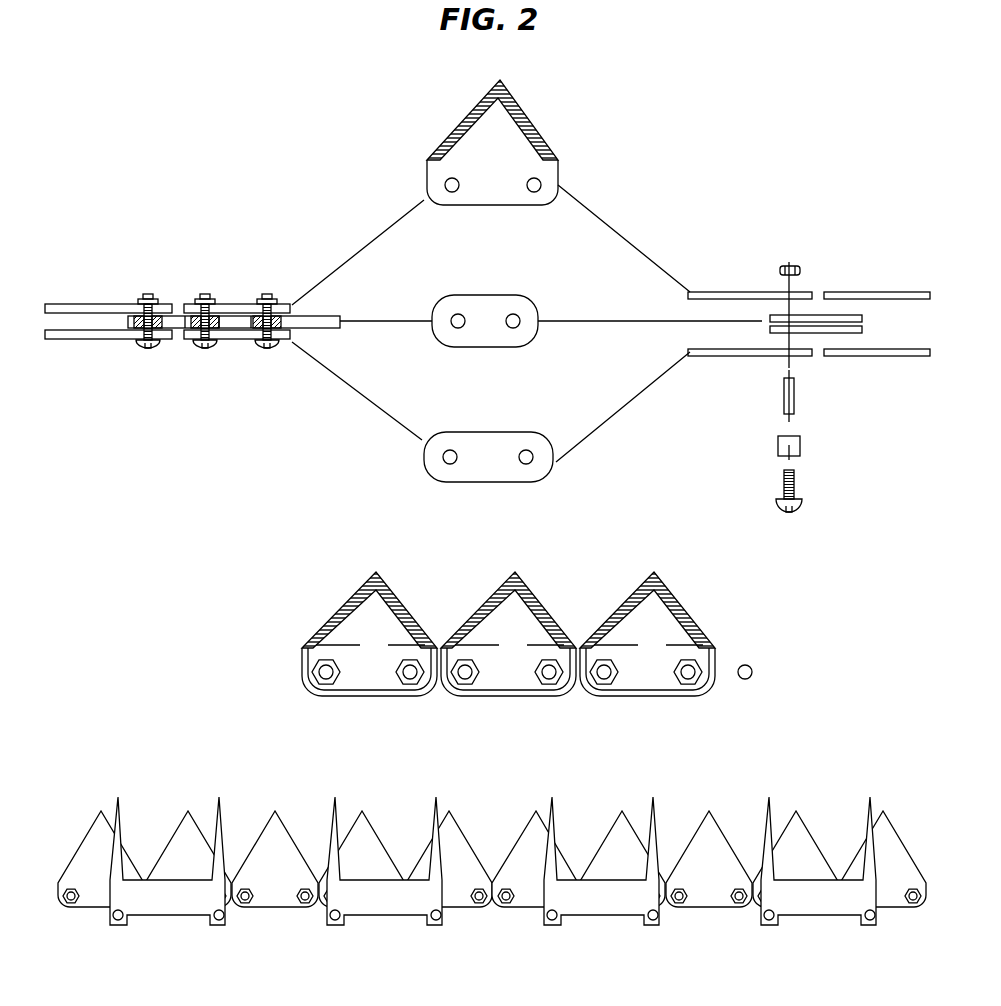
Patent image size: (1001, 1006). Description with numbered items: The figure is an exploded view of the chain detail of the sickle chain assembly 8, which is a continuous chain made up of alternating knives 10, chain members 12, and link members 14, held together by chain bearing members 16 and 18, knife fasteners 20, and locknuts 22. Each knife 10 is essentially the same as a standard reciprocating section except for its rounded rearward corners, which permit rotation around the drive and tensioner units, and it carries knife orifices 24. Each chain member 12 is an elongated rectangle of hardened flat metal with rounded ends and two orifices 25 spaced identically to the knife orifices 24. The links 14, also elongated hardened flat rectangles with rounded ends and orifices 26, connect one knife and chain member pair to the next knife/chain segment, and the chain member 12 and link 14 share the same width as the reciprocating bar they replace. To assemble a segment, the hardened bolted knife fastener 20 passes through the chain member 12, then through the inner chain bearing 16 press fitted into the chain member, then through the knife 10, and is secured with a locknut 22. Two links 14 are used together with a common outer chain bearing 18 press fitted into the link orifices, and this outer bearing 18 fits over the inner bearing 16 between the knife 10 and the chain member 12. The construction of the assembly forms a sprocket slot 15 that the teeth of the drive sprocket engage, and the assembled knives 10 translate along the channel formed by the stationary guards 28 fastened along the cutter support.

The sickle chain assembly 8 is at (492, 748).
The knife 10 is at (487, 142).
The chain member 12 is at (480, 476).
The link member 14 is at (480, 341).
The sprocket slot 15 is at (236, 322).
The inner chain bearing 16 is at (796, 397).
The outer chain bearing 18 is at (801, 447).
The knife fastener 20 is at (796, 487).
The locknut 22 is at (803, 270).
The knife orifice 24 is at (449, 182).
The chain member orifice 25 is at (528, 460).
The link orifice 26 is at (515, 324).
The stationary guard 28 is at (438, 793).